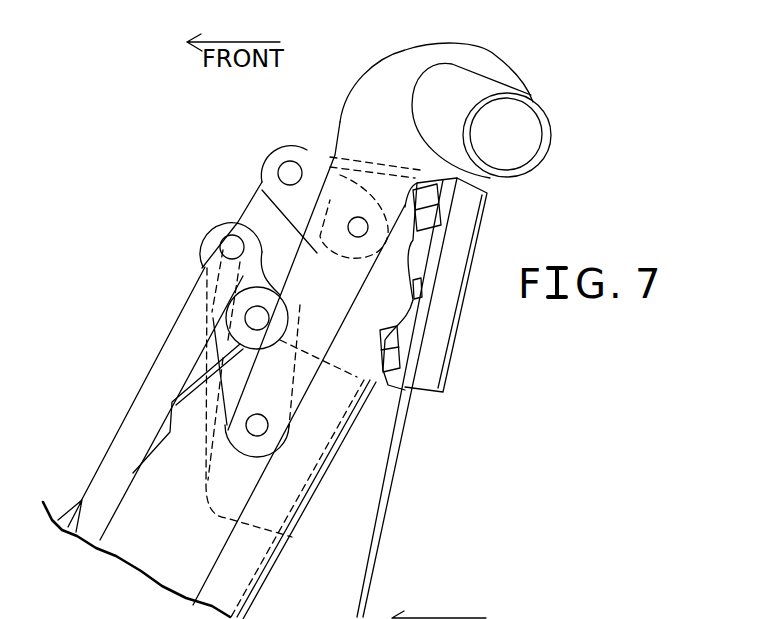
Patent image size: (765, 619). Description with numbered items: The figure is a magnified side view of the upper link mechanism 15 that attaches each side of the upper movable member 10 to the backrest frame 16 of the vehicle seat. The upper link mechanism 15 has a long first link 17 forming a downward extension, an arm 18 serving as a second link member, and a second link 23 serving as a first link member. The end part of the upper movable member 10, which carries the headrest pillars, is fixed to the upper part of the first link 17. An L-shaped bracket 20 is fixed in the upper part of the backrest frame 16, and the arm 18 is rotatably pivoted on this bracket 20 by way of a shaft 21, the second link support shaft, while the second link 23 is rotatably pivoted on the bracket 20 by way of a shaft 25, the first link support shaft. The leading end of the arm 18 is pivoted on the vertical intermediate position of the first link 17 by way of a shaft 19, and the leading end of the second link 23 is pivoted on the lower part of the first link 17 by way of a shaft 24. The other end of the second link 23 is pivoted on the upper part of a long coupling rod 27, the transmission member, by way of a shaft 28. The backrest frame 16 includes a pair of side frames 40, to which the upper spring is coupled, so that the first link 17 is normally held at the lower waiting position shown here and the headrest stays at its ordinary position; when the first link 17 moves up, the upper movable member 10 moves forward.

The upper movable member 10 is at (535, 172).
The upper link mechanism 15 is at (200, 143).
The backrest frame 16 is at (264, 597).
The first link 17 is at (380, 87).
The arm 18 is at (352, 180).
The shaft 19 is at (356, 230).
The bracket 20 is at (257, 155).
The shaft 21 is at (291, 172).
The second link 23 is at (197, 307).
The shaft 24 is at (256, 436).
The shaft 25 is at (262, 316).
The coupling rod 27 is at (152, 395).
The shaft 28 is at (225, 235).
The side frame 40 is at (279, 553).